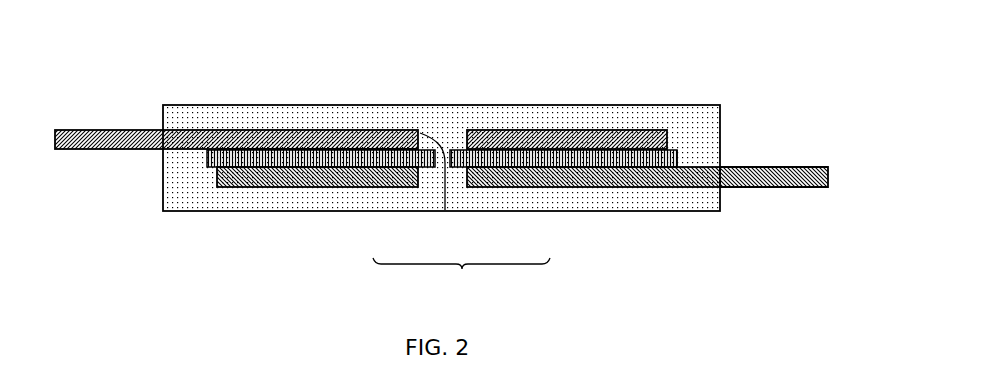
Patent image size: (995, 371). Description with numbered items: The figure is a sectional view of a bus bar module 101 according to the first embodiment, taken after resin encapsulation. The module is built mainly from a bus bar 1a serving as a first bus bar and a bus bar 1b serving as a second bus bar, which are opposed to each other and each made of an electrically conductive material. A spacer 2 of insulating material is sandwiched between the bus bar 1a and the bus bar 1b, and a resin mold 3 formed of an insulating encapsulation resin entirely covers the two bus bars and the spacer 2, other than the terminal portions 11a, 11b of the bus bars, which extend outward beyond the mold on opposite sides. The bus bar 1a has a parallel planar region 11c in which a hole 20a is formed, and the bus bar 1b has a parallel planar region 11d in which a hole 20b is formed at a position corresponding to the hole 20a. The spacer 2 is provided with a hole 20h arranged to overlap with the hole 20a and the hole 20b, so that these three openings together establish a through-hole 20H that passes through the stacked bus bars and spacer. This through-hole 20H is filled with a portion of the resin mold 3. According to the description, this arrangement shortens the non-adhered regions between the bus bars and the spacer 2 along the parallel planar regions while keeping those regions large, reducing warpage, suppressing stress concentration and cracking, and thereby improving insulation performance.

The bus bar module 101 is at (727, 63).
The resin mold 3 is at (447, 117).
The spacer 2 is at (677, 157).
The bus bar 1a is at (557, 187).
The bus bar 1b is at (547, 132).
The terminal portion 11a is at (777, 188).
The terminal portion 11b is at (122, 131).
The parallel planar region 11c is at (317, 187).
The parallel planar region 11d is at (333, 150).
The hole 20a is at (418, 183).
The hole 20b is at (450, 177).
The hole 20h is at (445, 210).
The through-hole 20H is at (461, 282).